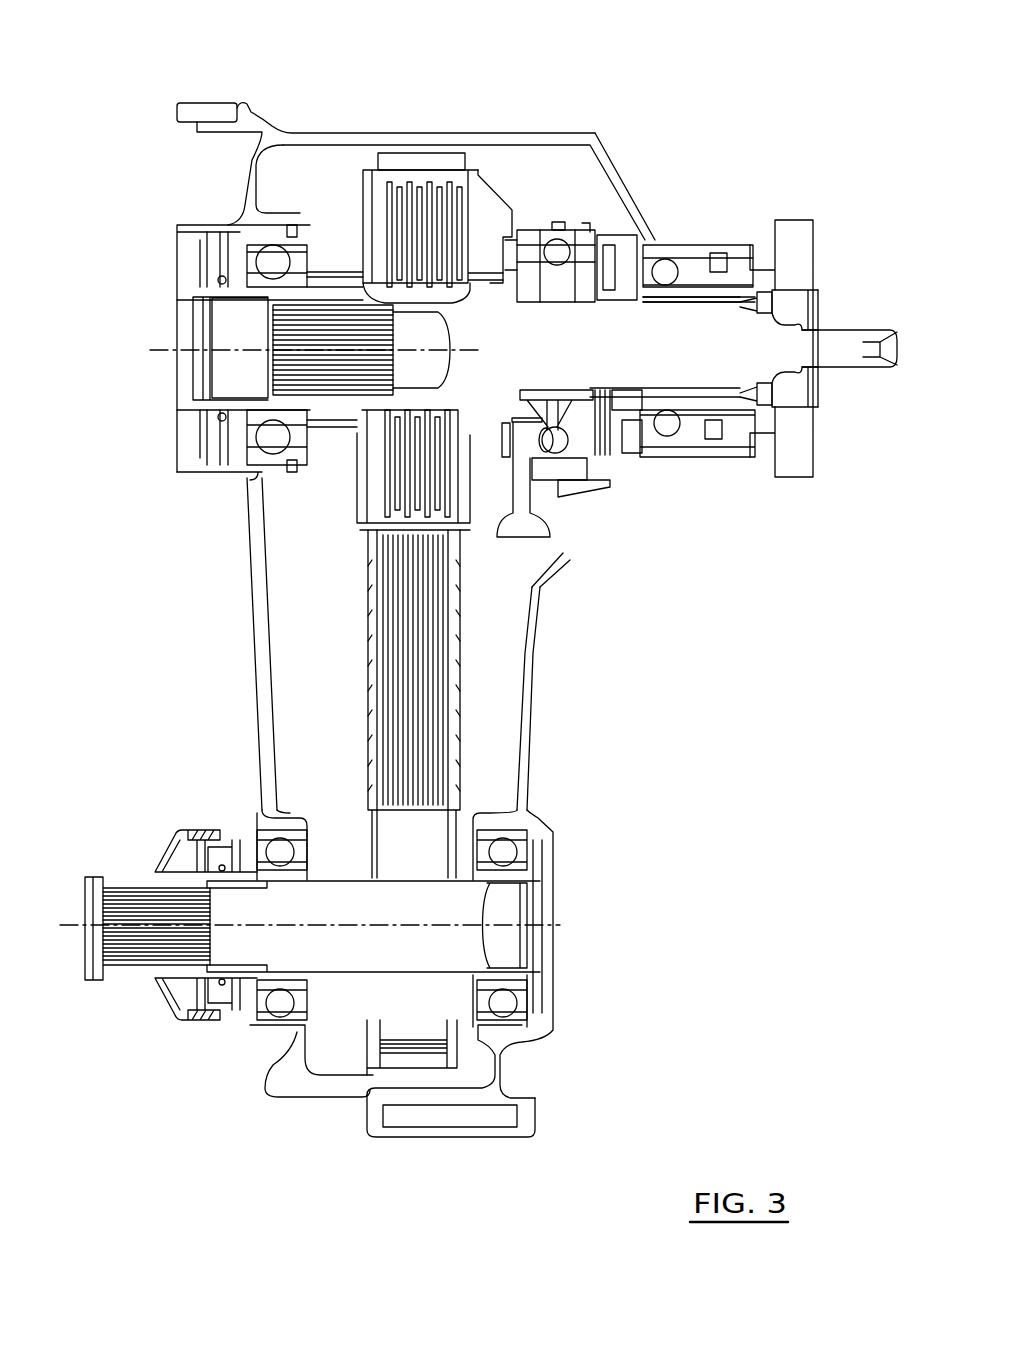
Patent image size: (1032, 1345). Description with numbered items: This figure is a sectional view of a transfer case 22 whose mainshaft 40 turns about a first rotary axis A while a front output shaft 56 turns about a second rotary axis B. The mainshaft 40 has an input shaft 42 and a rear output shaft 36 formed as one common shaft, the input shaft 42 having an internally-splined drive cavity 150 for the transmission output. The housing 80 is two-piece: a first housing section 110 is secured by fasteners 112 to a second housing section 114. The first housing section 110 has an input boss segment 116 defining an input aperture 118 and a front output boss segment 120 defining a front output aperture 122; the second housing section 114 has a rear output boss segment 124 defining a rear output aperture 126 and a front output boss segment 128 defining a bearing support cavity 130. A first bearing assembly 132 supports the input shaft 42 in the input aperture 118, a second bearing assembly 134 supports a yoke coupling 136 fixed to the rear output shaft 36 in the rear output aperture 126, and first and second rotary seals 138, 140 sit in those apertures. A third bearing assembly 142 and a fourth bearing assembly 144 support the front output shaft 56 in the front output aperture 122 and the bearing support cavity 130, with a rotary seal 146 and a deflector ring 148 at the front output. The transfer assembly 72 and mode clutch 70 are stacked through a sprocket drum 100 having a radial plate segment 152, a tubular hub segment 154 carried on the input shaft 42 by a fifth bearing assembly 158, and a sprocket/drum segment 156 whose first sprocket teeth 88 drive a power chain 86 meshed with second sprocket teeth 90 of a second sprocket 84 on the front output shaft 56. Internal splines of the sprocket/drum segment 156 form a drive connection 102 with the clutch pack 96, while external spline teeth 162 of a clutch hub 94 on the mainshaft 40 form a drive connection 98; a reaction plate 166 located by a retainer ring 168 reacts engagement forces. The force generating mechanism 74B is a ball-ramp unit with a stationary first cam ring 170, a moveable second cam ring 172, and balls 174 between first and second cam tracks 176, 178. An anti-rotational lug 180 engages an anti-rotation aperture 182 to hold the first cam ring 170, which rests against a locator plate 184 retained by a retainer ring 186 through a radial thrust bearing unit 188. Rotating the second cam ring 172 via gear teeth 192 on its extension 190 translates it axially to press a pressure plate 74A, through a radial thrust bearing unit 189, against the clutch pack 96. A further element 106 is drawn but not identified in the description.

The transfer case 22 is at (655, 685).
The rear output shaft 36 is at (796, 270).
The mainshaft 40 is at (699, 346).
The input shaft 42 is at (200, 409).
The front output shaft 56 is at (118, 977).
The mode clutch 70 is at (522, 172).
The transfer assembly 72 is at (366, 645).
The pressure plate 74A is at (513, 500).
The force generating mechanism 74B is at (508, 542).
The housing 80 is at (265, 719).
The second sprocket 84 is at (416, 1030).
The continuous power chain 86 is at (430, 729).
The first sprocket teeth 88 is at (414, 135).
The second sprocket teeth 90 is at (380, 1052).
The clutch hub 94 is at (395, 415).
The clutch pack 96 is at (408, 497).
The drive connection 98 is at (420, 412).
The sprocket drum 100 is at (478, 163).
The drive connection 102 is at (390, 187).
The clutch plate 106 is at (443, 187).
The first housing section 110 is at (282, 1058).
The fasteners 112 is at (457, 1120).
The second housing section 114 is at (525, 747).
The input boss segment 116 is at (223, 225).
The input aperture 118 is at (190, 472).
The front output boss segment 120 is at (257, 820).
The front output aperture 122 is at (270, 1004).
The rear output boss segment 124 is at (697, 248).
The rear output aperture 126 is at (735, 434).
The front output boss segment 128 is at (520, 817).
The bearing support cavity 130 is at (520, 1009).
The first bearing assembly 132 is at (258, 445).
The second bearing assembly 134 is at (660, 258).
The yoke coupling 136 is at (802, 427).
The first rotary seal 138 is at (205, 267).
The second rotary seal 140 is at (718, 258).
The third bearing assembly 142 is at (282, 850).
The fourth bearing assembly 144 is at (503, 859).
The rotary seal 146 is at (215, 1022).
The deflector ring 148 is at (170, 852).
The internally-splined drive cavity 150 is at (305, 306).
The radial plate segment 152 is at (363, 172).
The tubular hub segment 154 is at (290, 434).
The sprocket/drum segment 156 is at (387, 526).
The fifth bearing assembly 158 is at (253, 480).
The external spline teeth 162 is at (470, 285).
The reaction plate 166 is at (378, 246).
The retainer ring 168 is at (397, 301).
The first cam ring 170 is at (583, 228).
The second cam ring 172 is at (537, 236).
The balls 174 is at (557, 262).
The first cam track 176 is at (556, 430).
The second cam track 178 is at (552, 432).
The anti-rotational lug 180 is at (553, 482).
The anti-rotation aperture 182 is at (573, 508).
The locator plate 184 is at (700, 375).
The retainer ring 186 is at (642, 436).
The radial thrust bearing unit 188 is at (616, 404).
The radial thrust bearing unit 189 is at (506, 432).
The extension 190 is at (565, 500).
The gear teeth 192 is at (533, 540).
The first rotary axis A is at (177, 333).
The second rotary axis B is at (500, 925).